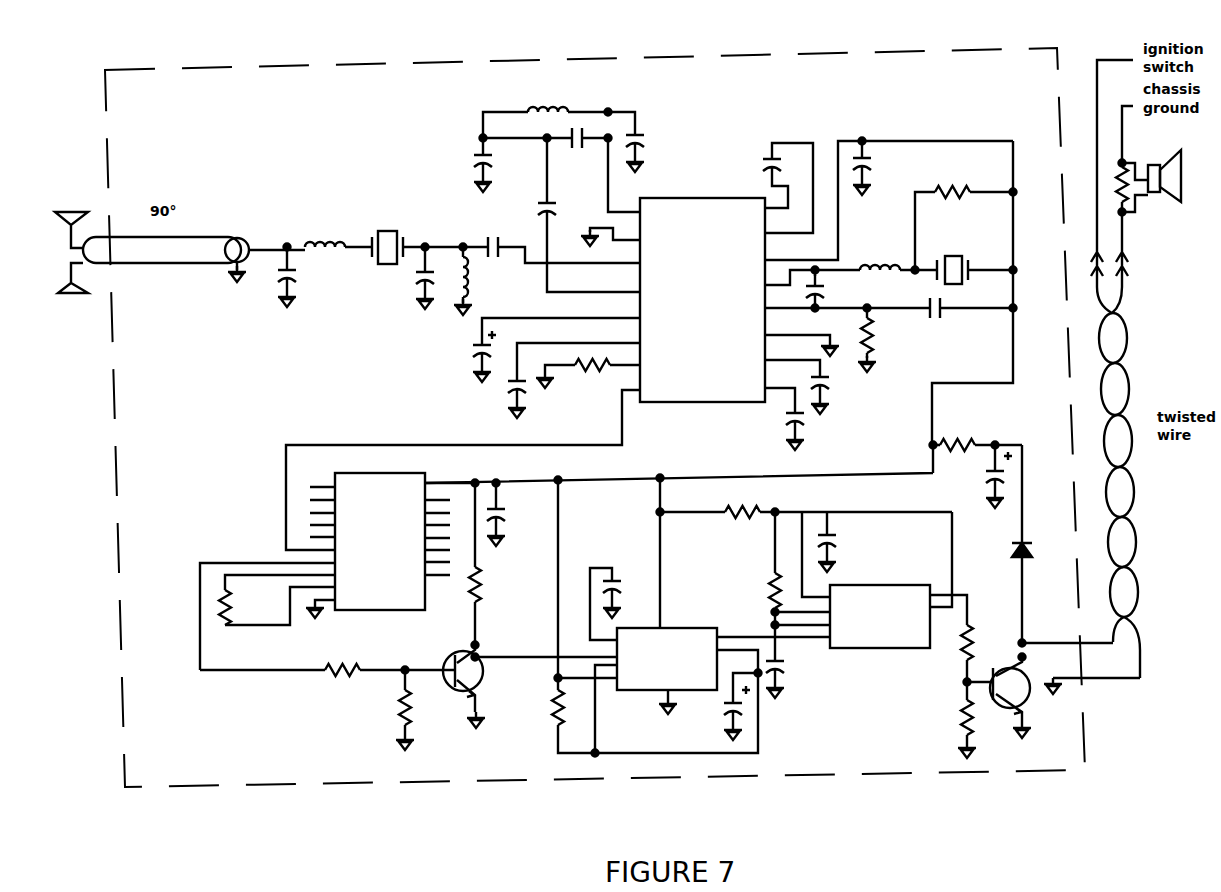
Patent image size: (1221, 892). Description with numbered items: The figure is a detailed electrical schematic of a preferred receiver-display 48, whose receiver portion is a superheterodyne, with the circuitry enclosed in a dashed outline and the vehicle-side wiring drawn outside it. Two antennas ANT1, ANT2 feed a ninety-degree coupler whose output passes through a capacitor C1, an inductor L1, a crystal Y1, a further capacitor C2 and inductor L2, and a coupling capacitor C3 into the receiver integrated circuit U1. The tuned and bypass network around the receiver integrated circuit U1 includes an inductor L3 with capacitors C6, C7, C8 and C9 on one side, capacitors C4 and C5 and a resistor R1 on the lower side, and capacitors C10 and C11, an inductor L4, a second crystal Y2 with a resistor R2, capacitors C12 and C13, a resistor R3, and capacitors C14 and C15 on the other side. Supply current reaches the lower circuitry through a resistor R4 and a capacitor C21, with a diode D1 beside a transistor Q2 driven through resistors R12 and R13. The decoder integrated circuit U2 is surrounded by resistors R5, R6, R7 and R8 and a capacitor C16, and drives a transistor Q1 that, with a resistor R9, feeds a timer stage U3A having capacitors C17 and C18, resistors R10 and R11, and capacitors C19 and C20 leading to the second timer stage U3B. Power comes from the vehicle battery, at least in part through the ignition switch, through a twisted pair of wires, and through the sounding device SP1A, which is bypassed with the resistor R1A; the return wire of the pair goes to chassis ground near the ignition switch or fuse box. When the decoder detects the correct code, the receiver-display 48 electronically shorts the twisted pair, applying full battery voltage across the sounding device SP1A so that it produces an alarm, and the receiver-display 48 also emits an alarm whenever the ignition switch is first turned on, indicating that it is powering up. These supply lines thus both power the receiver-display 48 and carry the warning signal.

The receiver-display 48 is at (833, 737).
The antenna 1 ANT1 is at (63, 217).
The antenna 2 ANT2 is at (66, 289).
The capacitor C1 is at (301, 277).
The inductor L1 is at (325, 232).
The crystal Y1 is at (387, 235).
The capacitor C2 is at (407, 278).
The inductor L2 is at (477, 281).
The capacitor C3 is at (488, 233).
The inductor L3 is at (559, 112).
The capacitor C6 is at (465, 165).
The capacitor C7 is at (545, 151).
The capacitor C8 is at (589, 215).
The capacitor C9 is at (648, 143).
The receiver IC U1 is at (702, 300).
The capacitor C4 is at (539, 350).
The capacitor C5 is at (558, 380).
The resistor R1 is at (588, 380).
The capacitor C10 is at (766, 188).
The capacitor C11 is at (889, 200).
The inductor L4 is at (840, 262).
The crystal Y2 is at (964, 256).
The resistor R2 is at (964, 216).
The capacitor C12 is at (833, 289).
The capacitor C13 is at (889, 316).
The resistor R3 is at (881, 340).
The capacitor C14 is at (816, 374).
The capacitor C15 is at (804, 419).
The resistor R4 is at (977, 434).
The capacitor C21 is at (977, 476).
The diode D1 is at (1002, 549).
The transistor Q2 is at (1006, 697).
The resistor R12 is at (971, 638).
The resistor R13 is at (945, 720).
The decoder IC U2 is at (390, 545).
The resistor R5 is at (267, 616).
The resistor R6 is at (327, 660).
The resistor R7 is at (388, 710).
The resistor R8 is at (490, 564).
The capacitor C16 is at (515, 514).
The transistor Q1 is at (461, 673).
The resistor R9 is at (544, 701).
The capacitor C17 is at (608, 591).
The timer IC A U3A is at (667, 671).
The capacitor C18 is at (719, 706).
The resistor R10 is at (806, 525).
The resistor R11 is at (754, 574).
The capacitor C19 is at (799, 667).
The capacitor C20 is at (840, 554).
The timer IC B U3B is at (880, 616).
The resistor R1A is at (1140, 170).
The speaker SP1A is at (1151, 193).